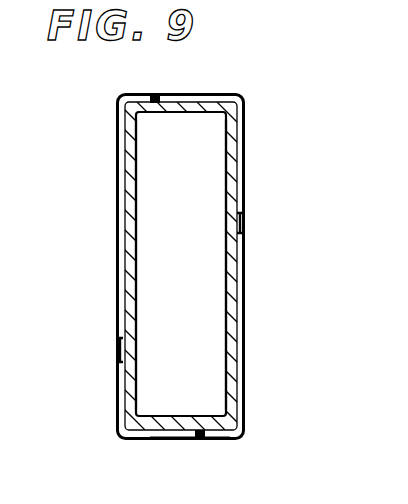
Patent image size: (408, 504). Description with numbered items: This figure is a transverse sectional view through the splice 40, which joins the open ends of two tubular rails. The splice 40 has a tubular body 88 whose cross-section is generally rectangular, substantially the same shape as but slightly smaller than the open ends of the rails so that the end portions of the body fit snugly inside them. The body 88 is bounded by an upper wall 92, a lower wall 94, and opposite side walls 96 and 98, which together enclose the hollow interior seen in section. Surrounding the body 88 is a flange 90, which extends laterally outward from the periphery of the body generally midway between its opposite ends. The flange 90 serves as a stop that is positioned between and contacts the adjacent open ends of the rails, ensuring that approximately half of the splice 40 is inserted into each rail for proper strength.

The splice 40 is at (160, 438).
The tubular body 88 is at (136, 333).
The flange 90 is at (118, 214).
The upper wall 92 is at (192, 414).
The lower wall 94 is at (160, 114).
The side wall 96 is at (137, 217).
The side wall 98 is at (226, 262).